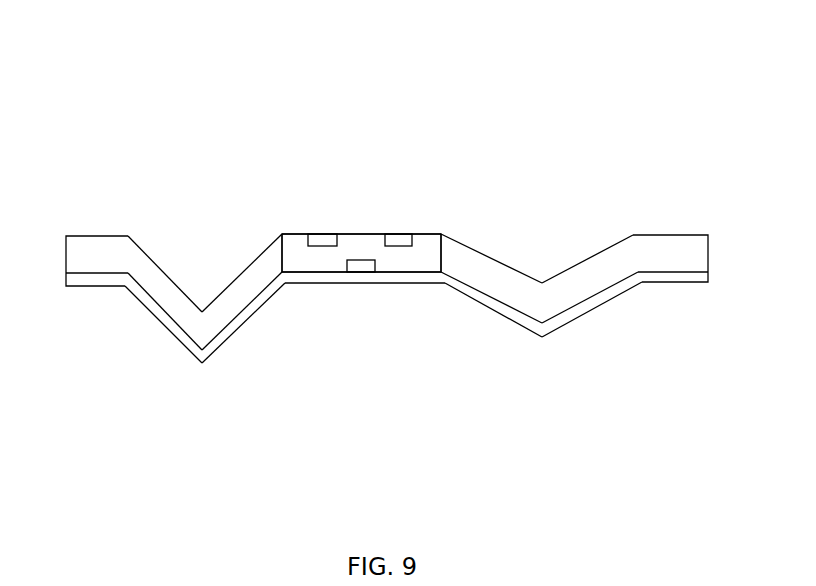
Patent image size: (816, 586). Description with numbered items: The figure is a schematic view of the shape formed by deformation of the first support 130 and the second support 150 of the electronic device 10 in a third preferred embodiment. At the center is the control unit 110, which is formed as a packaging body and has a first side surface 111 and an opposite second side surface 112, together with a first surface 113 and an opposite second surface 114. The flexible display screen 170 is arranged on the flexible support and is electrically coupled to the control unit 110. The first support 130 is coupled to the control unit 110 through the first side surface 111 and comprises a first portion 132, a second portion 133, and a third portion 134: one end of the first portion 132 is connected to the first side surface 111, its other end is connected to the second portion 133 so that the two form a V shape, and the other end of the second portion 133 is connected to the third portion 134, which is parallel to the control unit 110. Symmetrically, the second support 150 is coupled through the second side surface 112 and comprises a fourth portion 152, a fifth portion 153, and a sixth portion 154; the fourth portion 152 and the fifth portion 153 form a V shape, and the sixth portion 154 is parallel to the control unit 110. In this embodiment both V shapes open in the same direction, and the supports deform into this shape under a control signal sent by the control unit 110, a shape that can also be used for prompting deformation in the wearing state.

The electronic device 10 is at (412, 58).
The control unit 110 is at (377, 265).
The first side surface 111 is at (272, 248).
The second side surface 112 is at (448, 257).
The first surface 113 is at (295, 225).
The second surface 114 is at (405, 282).
The flexible display screen 170 is at (457, 287).
The first support 130 is at (161, 376).
The first portion 132 is at (242, 292).
The second portion 133 is at (157, 337).
The third portion 134 is at (82, 330).
The second support 150 is at (584, 371).
The fourth portion 152 is at (491, 331).
The fifth portion 153 is at (592, 334).
The sixth portion 154 is at (680, 334).